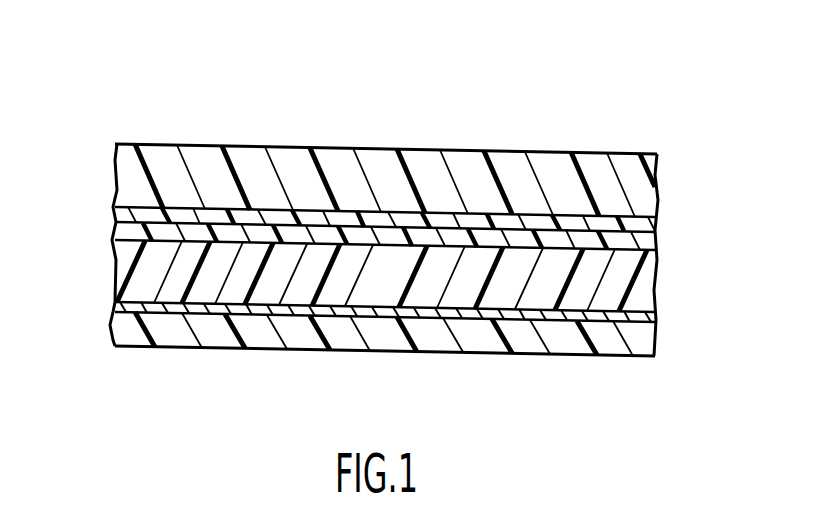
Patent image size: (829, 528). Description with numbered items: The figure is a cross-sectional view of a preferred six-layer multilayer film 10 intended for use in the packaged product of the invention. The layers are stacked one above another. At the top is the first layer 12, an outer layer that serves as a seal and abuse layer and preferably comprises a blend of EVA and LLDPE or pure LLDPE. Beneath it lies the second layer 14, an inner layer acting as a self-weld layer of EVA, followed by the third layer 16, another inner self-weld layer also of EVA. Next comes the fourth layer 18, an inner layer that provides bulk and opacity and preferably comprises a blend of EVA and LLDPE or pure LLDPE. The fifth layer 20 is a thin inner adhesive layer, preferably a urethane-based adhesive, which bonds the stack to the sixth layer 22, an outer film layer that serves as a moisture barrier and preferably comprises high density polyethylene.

The film 10 is at (63, 102).
The first layer 12 is at (640, 192).
The second layer 14 is at (645, 230).
The third layer 16 is at (644, 238).
The fourth layer 18 is at (640, 284).
The fifth layer 20 is at (650, 317).
The sixth layer 22 is at (652, 350).